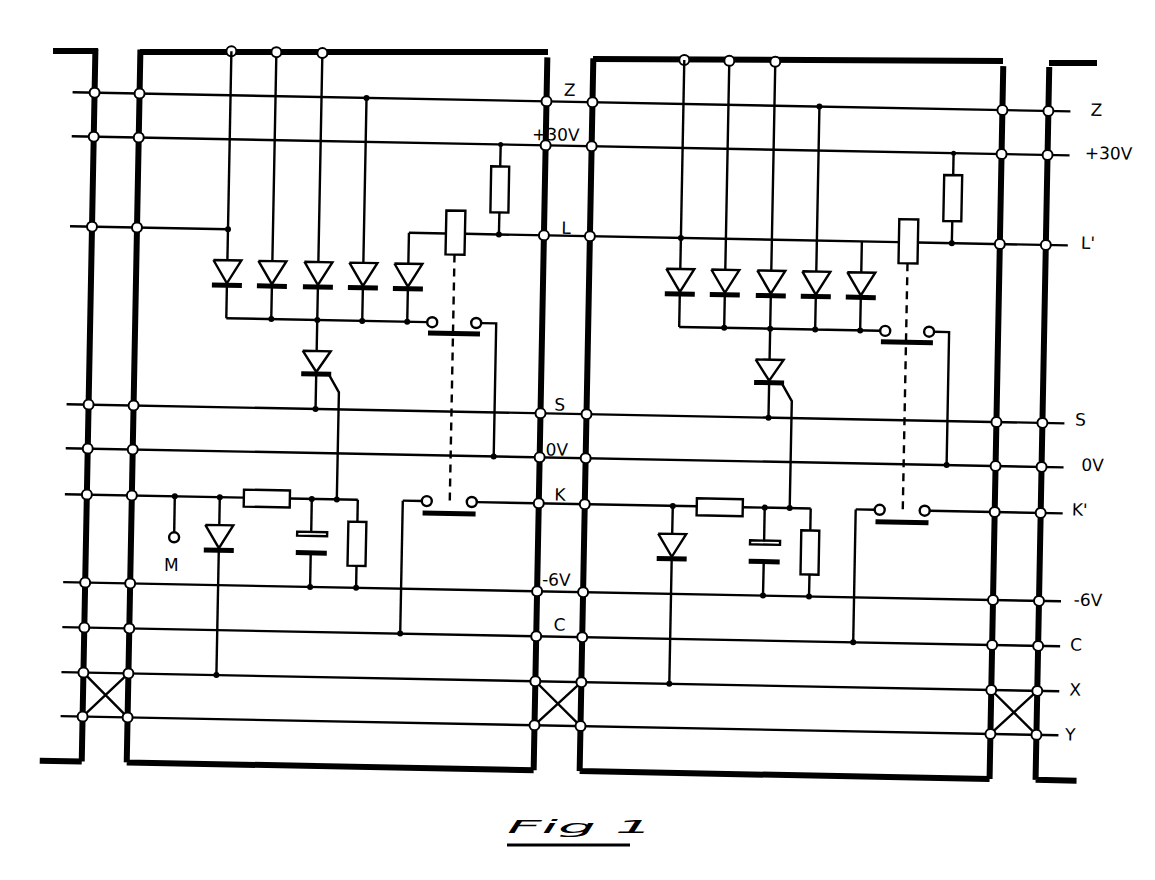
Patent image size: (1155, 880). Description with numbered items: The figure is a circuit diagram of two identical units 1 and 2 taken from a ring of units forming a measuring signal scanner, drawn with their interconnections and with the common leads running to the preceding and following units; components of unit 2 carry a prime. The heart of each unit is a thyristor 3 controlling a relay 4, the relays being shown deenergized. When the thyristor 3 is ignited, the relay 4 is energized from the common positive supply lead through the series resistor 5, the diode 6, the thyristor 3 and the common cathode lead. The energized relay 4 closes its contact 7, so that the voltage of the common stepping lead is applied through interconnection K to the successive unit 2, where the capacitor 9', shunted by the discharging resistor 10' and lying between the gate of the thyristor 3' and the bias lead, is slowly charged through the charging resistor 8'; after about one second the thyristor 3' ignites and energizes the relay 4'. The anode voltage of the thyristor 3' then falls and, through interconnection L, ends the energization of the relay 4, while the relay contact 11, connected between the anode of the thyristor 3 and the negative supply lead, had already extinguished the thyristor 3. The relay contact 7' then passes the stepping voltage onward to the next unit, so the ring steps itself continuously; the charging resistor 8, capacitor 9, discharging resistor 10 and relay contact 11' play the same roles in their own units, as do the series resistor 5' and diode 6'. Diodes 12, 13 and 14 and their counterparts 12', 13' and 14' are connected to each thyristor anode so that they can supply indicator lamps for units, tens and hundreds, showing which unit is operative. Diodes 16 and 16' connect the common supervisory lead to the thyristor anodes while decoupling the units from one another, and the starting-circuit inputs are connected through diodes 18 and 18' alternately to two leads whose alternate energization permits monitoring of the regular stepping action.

The unit 1 is at (438, 40).
The unit 2 is at (897, 46).
The thyristor 3 is at (304, 425).
The relay 4 is at (445, 358).
The series resistor 5 is at (509, 190).
The diode 6 is at (404, 288).
The relay contact 7 is at (441, 555).
The charging resistor 8 is at (267, 488).
The capacitor 9 is at (305, 543).
The discharging resistor 10 is at (369, 544).
The relay contact 11 is at (461, 375).
The diode 12 is at (215, 184).
The diode 13 is at (263, 286).
The diode 14 is at (310, 287).
The diode 16 is at (353, 287).
The diode 18 is at (230, 586).
The thyristor 3' is at (758, 433).
The relay 4' is at (896, 365).
The series resistor 5' is at (964, 198).
The diode 6' is at (856, 296).
The relay contact 7' is at (898, 561).
The charging resistor 8' is at (720, 495).
The capacitor 9' is at (758, 552).
The discharging resistor 10' is at (824, 553).
The relay contact 11' is at (916, 383).
The diode 12' is at (668, 193).
The diode 13' is at (713, 295).
The diode 14' is at (760, 295).
The diode 16' is at (805, 295).
The diode 18' is at (657, 595).